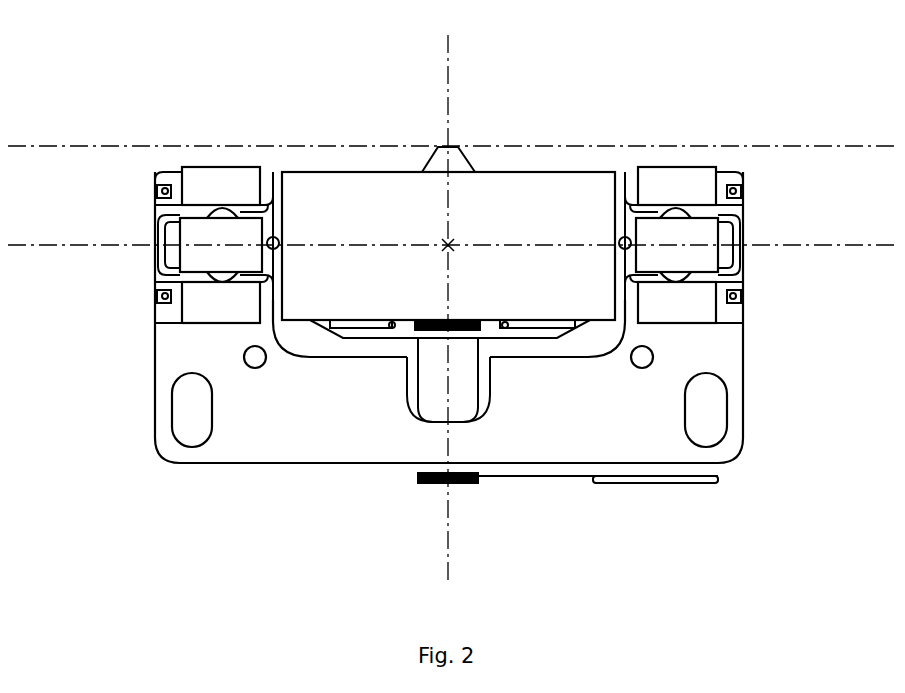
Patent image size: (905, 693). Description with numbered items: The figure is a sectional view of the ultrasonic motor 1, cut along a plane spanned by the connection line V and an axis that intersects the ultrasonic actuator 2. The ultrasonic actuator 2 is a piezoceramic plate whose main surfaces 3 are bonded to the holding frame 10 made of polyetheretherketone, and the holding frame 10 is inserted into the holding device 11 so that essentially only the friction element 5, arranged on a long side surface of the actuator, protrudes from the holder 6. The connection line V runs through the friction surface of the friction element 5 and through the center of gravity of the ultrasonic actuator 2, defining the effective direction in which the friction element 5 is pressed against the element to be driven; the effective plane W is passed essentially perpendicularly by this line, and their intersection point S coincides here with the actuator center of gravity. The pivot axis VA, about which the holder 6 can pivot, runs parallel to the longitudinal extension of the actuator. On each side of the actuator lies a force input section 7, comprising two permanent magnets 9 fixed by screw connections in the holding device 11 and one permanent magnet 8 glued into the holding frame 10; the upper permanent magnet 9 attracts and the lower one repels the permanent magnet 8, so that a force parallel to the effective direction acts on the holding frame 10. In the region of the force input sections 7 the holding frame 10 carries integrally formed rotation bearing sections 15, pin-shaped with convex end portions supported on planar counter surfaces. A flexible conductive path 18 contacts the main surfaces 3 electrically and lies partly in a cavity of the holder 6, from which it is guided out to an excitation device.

The ultrasonic motor 1 is at (738, 112).
The ultrasonic actuator 2 is at (330, 198).
The main surfaces 3 is at (355, 290).
The friction element 5 is at (470, 160).
The holder 6 is at (580, 138).
The force input section 7 is at (186, 266).
The permanent magnet 8 is at (190, 215).
The permanent magnet 9 is at (205, 178).
The holding frame 10 is at (623, 175).
The holding device 11 is at (620, 405).
The rotation bearing section 15 is at (143, 252).
The flexible conductive path 18 is at (440, 400).
The intersection point S is at (445, 242).
The pivot axis VA is at (447, 147).
The effective plane W is at (775, 241).
The connection line V is at (449, 522).